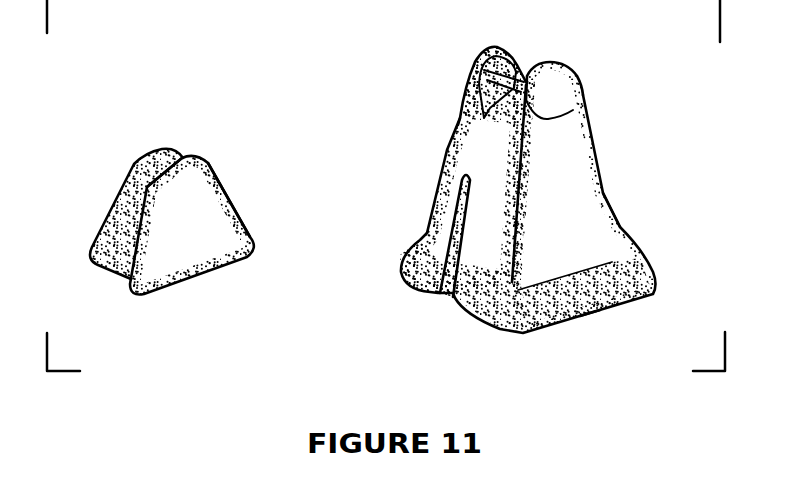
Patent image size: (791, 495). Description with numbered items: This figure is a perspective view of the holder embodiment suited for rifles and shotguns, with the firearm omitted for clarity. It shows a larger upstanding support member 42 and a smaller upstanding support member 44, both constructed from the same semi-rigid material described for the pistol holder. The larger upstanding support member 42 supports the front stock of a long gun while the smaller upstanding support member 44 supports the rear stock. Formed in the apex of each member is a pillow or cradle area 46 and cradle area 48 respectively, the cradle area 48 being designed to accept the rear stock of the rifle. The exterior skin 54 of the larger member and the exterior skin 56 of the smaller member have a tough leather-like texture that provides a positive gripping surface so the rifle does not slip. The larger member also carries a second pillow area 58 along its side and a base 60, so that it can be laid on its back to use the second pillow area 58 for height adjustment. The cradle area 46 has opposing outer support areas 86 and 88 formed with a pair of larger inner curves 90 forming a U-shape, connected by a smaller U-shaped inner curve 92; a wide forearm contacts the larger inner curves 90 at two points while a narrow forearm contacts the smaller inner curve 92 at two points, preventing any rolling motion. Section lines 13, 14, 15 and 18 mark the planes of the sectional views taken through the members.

The section line 13- 13 is at (643, 186).
The section line 14- 14 is at (415, 202).
The section line 15- 15 is at (508, 193).
The section line 18- 18 is at (99, 228).
The larger upstanding support member 42 is at (588, 212).
The smaller upstanding support member 44 is at (210, 249).
The cradle area 46 is at (463, 72).
The cradle area 48 is at (222, 110).
The exterior skin 54 is at (604, 190).
The exterior skin 56 is at (221, 188).
The second pillow area 58 is at (437, 272).
The base 60 is at (580, 317).
The outer support area 86 is at (473, 50).
The outer support area 88 is at (555, 60).
The larger inner curves 90 is at (573, 110).
The smaller U-shaped inner curve 92 is at (460, 115).